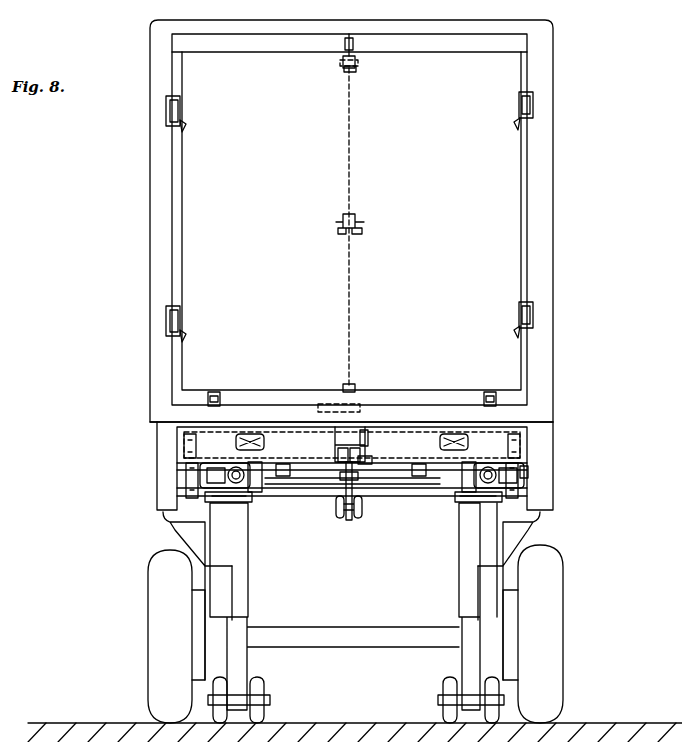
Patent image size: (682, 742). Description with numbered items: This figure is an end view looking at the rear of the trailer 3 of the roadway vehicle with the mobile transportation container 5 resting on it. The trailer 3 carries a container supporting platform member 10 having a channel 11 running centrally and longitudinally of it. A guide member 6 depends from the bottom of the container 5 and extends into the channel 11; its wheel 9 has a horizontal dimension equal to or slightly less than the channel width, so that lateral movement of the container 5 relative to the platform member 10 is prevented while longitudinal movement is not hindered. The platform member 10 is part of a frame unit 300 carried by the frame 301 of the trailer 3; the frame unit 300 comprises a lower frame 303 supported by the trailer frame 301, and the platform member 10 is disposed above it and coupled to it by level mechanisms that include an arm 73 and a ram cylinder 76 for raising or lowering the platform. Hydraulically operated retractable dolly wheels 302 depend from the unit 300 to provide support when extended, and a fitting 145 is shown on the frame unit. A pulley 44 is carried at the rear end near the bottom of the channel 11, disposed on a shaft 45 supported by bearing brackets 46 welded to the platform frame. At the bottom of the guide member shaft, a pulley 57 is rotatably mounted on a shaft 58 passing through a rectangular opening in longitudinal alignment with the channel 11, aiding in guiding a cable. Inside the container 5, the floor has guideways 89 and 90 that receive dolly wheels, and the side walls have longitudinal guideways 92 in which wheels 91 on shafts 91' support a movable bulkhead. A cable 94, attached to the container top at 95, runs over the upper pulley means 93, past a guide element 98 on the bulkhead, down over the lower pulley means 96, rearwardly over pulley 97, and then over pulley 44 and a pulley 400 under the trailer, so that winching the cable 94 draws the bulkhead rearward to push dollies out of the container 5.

The trailer 3 is at (564, 446).
The mobile transportation container 5 is at (144, 205).
The guide member 6 is at (356, 430).
The wheel 9 is at (364, 440).
The container supporting platform member 10 is at (527, 428).
The channel 11 is at (372, 458).
The pulley 44 is at (346, 480).
The shaft 45 is at (352, 500).
The bearing bracket 46 is at (283, 476).
The pulley 57 is at (360, 450).
The shaft 58 is at (336, 452).
The arm 73 is at (204, 470).
The cylinder 76 is at (222, 478).
The guideway 89 is at (210, 406).
The guideway 90 is at (492, 406).
The wheel 91 is at (352, 225).
The shaft 91' is at (355, 251).
The longitudinal guideway 92 is at (168, 98).
The pulley means 93 is at (345, 68).
The cable 94 is at (352, 40).
The cable attachment point 95 is at (340, 44).
The pulley means 96 is at (345, 384).
The pulley 97 is at (320, 410).
The rod guide 98 is at (343, 222).
The connector fitting 145 is at (238, 441).
The frame unit 300 is at (532, 474).
The trailer frame 301 is at (176, 496).
The retractable dolly wheels 302 is at (266, 692).
The lower frame 303 is at (200, 510).
The pulley 400 is at (349, 514).